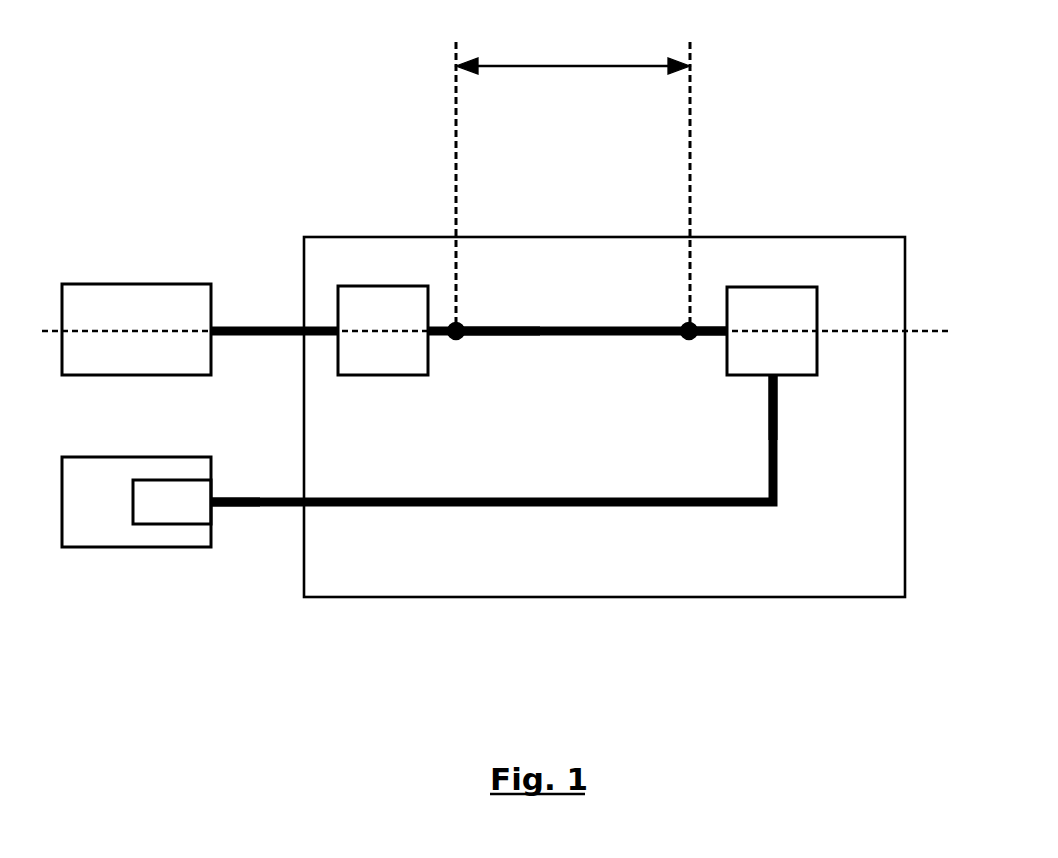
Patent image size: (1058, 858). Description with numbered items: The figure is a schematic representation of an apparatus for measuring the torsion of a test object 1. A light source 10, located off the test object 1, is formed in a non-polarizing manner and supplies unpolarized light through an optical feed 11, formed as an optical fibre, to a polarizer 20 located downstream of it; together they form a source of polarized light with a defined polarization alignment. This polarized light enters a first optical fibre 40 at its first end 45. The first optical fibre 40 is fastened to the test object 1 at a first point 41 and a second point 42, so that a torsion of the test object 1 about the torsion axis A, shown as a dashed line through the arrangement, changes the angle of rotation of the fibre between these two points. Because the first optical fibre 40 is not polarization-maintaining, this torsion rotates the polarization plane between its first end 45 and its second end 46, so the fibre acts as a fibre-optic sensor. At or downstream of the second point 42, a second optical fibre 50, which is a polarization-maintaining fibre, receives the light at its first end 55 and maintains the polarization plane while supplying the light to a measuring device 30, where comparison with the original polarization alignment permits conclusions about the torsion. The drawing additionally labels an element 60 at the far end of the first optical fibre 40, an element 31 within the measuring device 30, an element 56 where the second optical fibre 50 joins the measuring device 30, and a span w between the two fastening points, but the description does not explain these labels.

The test object 1 is at (778, 597).
The light source 10 is at (122, 285).
The optical feed 11 is at (233, 330).
The polarizer 20 is at (364, 287).
The measuring device 30 is at (95, 548).
The processing unit 31 is at (167, 525).
The first optical fibre 40 is at (552, 328).
The first point 41 is at (458, 328).
The second point 42 is at (694, 326).
The first end of the first optical fibre 45 is at (432, 328).
The second end of the first optical fibre 46 is at (729, 324).
The second optical fibre 50 is at (600, 505).
The first end of the second optical fibre 55 is at (773, 376).
The evaluation unit connection 56 is at (211, 498).
The detector 60 is at (812, 287).
The torsion axis A is at (880, 326).
The width w is at (573, 183).